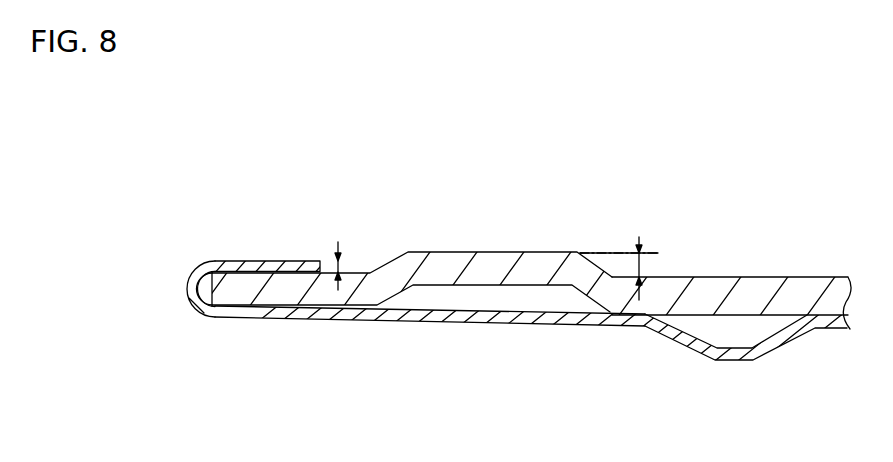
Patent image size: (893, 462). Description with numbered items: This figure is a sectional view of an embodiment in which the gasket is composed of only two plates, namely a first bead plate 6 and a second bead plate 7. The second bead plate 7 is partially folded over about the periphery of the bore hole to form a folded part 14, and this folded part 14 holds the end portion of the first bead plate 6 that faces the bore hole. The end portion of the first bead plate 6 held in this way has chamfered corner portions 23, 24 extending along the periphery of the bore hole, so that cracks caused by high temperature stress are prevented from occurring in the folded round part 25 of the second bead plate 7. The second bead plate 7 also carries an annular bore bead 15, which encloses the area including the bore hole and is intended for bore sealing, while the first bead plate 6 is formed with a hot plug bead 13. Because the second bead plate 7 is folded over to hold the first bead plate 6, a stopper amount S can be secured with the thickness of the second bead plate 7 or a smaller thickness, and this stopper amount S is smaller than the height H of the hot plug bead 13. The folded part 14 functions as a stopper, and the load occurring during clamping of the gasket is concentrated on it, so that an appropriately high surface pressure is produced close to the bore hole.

The first bead plate 6 is at (783, 277).
The second bead plate 7 is at (597, 324).
The hot plug bead 13 is at (513, 252).
The folded part 14 is at (265, 260).
The annular bore bead 15 is at (745, 360).
The chamfered corner portion 23 is at (212, 268).
The chamfered corner portion 24 is at (207, 316).
The folded round part 25 is at (187, 290).
The stopper amount S is at (350, 272).
The height of hot plug bead H is at (640, 270).